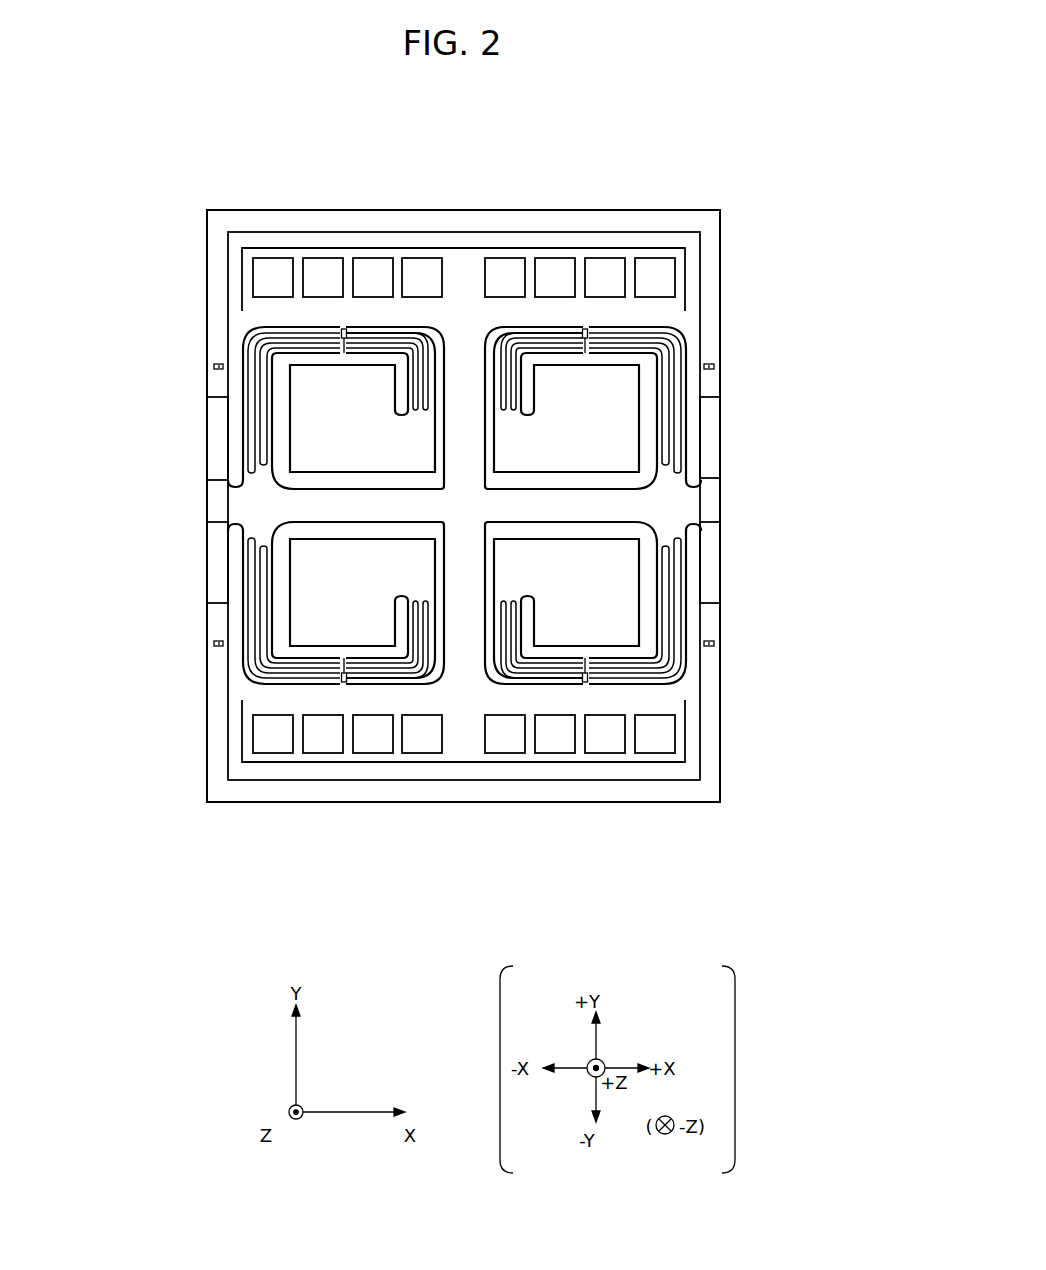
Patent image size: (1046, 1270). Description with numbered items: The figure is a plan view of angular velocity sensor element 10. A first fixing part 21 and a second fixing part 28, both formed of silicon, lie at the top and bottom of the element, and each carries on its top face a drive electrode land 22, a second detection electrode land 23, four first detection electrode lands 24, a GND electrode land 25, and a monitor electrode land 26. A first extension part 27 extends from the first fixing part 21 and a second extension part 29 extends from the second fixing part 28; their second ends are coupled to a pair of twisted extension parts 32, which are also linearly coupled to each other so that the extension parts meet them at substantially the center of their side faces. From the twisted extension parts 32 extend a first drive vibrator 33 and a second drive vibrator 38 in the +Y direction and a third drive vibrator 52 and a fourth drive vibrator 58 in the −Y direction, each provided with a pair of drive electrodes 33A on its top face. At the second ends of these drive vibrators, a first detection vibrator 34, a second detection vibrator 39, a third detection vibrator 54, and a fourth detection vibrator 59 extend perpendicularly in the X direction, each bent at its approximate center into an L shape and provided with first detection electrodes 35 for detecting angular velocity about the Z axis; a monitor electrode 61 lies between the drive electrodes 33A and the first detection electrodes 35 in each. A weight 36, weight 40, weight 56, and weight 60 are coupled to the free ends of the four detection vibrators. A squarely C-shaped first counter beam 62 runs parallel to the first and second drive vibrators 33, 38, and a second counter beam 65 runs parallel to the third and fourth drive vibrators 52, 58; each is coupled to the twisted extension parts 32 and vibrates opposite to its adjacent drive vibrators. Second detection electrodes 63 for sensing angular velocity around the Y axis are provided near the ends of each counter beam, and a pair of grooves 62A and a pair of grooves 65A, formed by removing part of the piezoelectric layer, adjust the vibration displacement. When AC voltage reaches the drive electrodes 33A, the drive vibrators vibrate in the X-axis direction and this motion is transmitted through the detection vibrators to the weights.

The angular velocity sensor element 10 is at (152, 140).
The first fixing part 21 is at (458, 267).
The drive electrode land 22 is at (270, 270).
The second detection electrode land 23 is at (508, 270).
The first detection electrode land 24 is at (413, 265).
The GND electrode land 25 is at (647, 263).
The monitor electrode land 26 is at (327, 268).
The first extension part 27 is at (462, 338).
The second fixing part 28 is at (660, 740).
The second extension part 29 is at (467, 618).
The twisted extension part 32 is at (598, 500).
The first drive vibrator 33 is at (668, 402).
The drive electrode 33A is at (268, 443).
The first detection vibrator 34 is at (587, 330).
The first detection electrode 35 is at (567, 333).
The weight 36 is at (600, 393).
The second drive vibrator 38 is at (258, 385).
The second detection vibrator 39 is at (435, 340).
The weight 40 is at (305, 390).
The third drive vibrator 52 is at (258, 603).
The third detection vibrator 54 is at (385, 672).
The weight 56 is at (315, 625).
The fourth drive vibrator 58 is at (668, 602).
The fourth detection vibrator 59 is at (578, 678).
The weight 60 is at (548, 582).
The monitor electrode 61 is at (344, 333).
The first counter beam 62 is at (680, 218).
The groove 62A is at (218, 366).
The second detection electrode 63 is at (218, 465).
The second counter beam 65 is at (710, 760).
The groove 65A is at (222, 643).